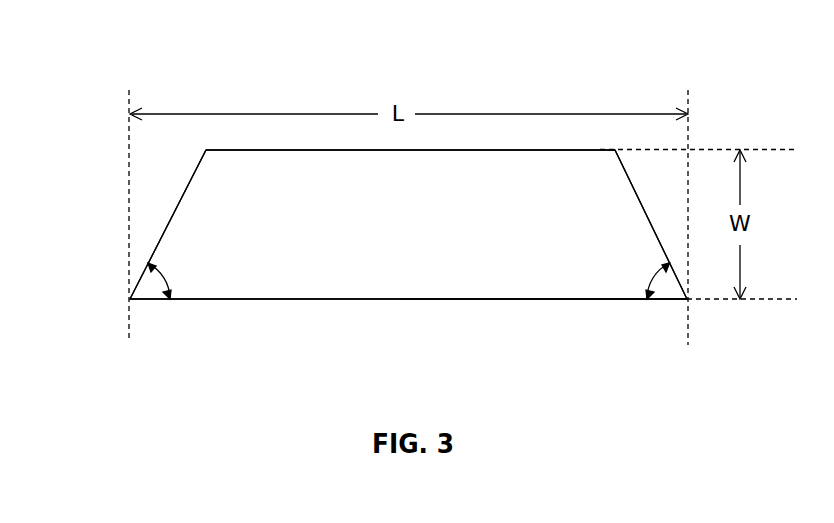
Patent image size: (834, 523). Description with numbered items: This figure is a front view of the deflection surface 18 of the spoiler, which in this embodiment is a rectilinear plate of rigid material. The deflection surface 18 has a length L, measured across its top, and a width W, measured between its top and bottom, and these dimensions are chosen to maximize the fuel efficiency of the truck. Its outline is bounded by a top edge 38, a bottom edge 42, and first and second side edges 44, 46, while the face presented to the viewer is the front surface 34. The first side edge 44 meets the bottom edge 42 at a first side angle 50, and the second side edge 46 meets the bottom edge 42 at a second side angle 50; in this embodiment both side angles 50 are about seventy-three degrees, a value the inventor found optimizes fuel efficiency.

The deflection surface 18 is at (532, 272).
The front surface 34 is at (335, 227).
The top edge 38 is at (293, 149).
The bottom edge 42 is at (232, 300).
The first side edge 44 is at (185, 191).
The second side edge 46 is at (629, 173).
The side angle 50 is at (164, 278).